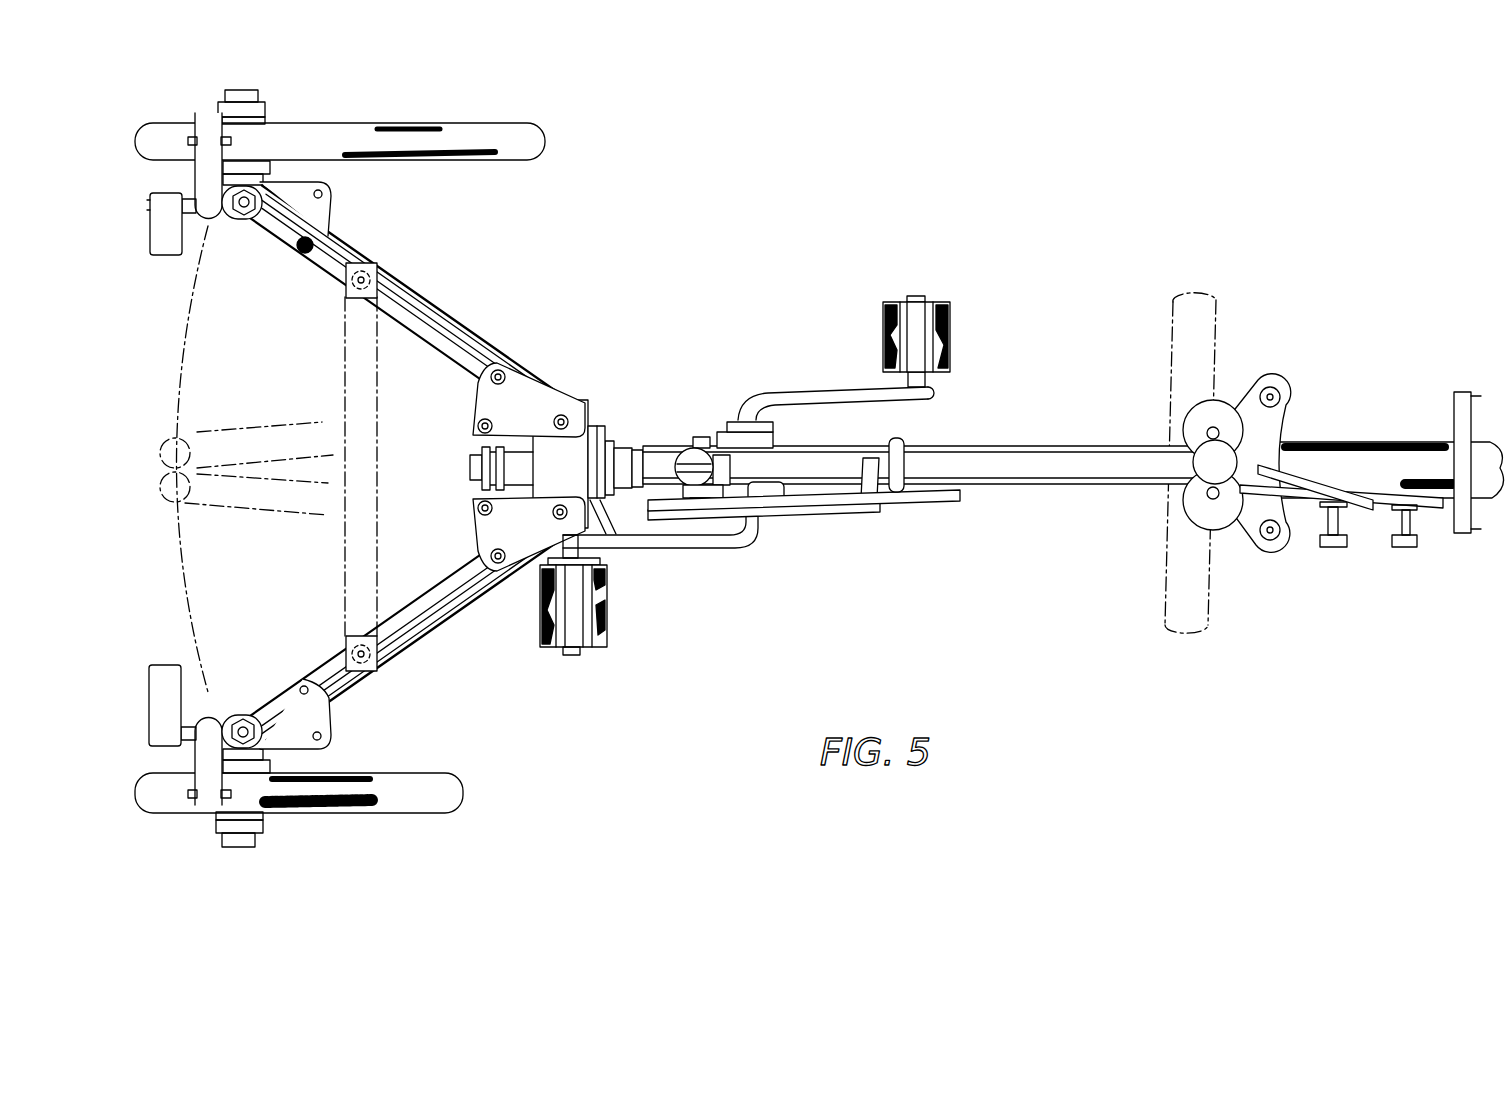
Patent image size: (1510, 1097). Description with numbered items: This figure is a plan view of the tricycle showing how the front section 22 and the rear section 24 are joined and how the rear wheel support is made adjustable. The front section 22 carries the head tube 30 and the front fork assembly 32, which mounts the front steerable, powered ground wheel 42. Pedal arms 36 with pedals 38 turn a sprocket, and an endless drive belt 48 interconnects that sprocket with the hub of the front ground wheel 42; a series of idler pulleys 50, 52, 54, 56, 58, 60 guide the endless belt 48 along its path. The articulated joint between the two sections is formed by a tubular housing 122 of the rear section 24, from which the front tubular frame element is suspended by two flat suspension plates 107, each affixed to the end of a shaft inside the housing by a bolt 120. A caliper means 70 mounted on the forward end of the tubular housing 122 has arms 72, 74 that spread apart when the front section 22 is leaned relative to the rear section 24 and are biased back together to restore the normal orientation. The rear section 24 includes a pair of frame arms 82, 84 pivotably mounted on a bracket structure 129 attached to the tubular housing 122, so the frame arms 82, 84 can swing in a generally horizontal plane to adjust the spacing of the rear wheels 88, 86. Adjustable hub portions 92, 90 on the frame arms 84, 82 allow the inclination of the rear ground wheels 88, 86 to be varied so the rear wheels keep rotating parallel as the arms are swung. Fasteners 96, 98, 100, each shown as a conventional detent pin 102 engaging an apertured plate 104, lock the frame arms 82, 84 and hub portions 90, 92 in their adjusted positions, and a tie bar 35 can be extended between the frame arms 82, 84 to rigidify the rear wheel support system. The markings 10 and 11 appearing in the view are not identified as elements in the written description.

The apparatus 10 is at (1333, 626).
The frame assembly 11 is at (490, 658).
The front section 22 is at (1041, 438).
The rear section 24 is at (470, 308).
The head tube 30 is at (1283, 407).
The front fork assembly 32 is at (1360, 544).
The tie bar 35 is at (163, 256).
The pedal arms 36 is at (808, 386).
The pedals 38 is at (950, 318).
The front ground wheel 42 is at (1492, 503).
The endless drive belt 48 is at (945, 502).
The idler pulley 50 is at (733, 505).
The idler pulley 52 is at (890, 512).
The idler pulley 54 is at (1190, 502).
The idler pulley 56 is at (1195, 418).
The idler pulley 58 is at (1320, 506).
The idler pulley 60 is at (1405, 520).
The caliper means 70 is at (634, 409).
The caliper arm 72 is at (610, 513).
The caliper arm 74 is at (592, 503).
The frame arm 82 is at (407, 633).
The frame arm 84 is at (478, 338).
The rear wheel 86 is at (425, 805).
The rear ground wheel 88 is at (535, 125).
The adjustable hub portion 90 is at (231, 698).
The adjustable hub portion 92 is at (229, 240).
The fastener 96 is at (360, 218).
The fastener 98 is at (447, 418).
The fastener 100 is at (462, 537).
The detent pin 102 is at (515, 371).
The apertured plate 104 is at (333, 207).
The suspension plate 107 is at (630, 443).
The bolt 120 is at (652, 449).
The tubular housing 122 is at (467, 543).
The bracket structure 129 is at (592, 440).